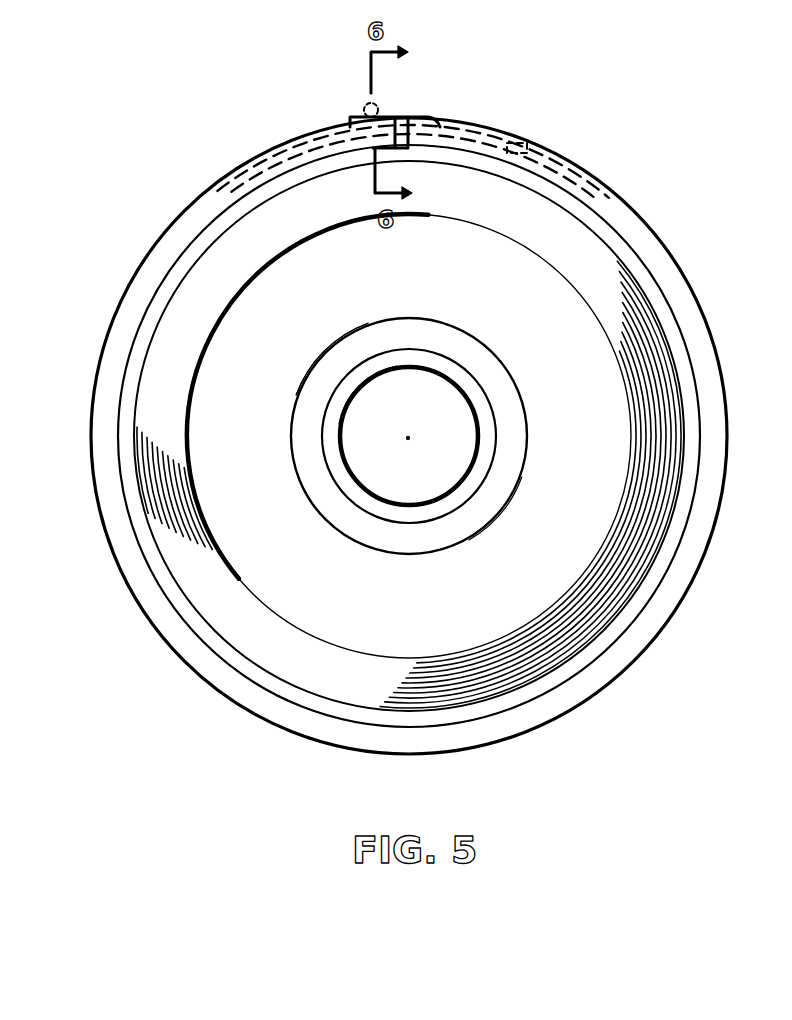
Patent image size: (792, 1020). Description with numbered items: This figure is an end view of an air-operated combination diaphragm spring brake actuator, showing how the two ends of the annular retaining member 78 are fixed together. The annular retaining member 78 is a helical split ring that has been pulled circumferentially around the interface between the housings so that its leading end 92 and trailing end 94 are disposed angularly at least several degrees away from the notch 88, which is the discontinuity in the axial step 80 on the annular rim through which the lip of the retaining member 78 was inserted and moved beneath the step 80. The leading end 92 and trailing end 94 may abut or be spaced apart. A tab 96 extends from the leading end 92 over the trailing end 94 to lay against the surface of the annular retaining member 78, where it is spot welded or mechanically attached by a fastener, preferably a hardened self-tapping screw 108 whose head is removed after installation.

The annular retaining member 78 is at (612, 210).
The axial step 80 is at (527, 153).
The notch 88 is at (477, 143).
The leading end 92 is at (432, 130).
The trailing end 94 is at (297, 153).
The tab 96 is at (400, 117).
The hardened self-tapping screw 108 is at (370, 105).